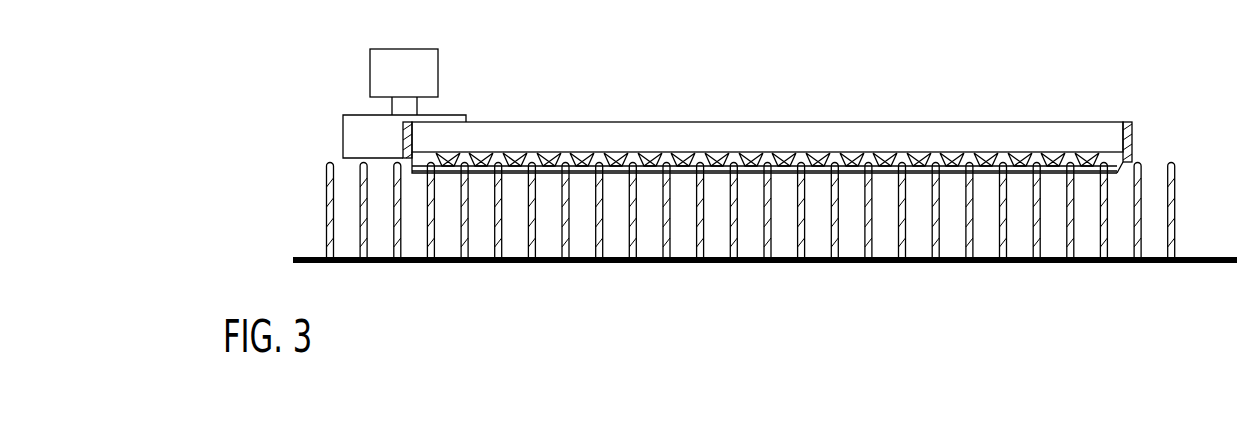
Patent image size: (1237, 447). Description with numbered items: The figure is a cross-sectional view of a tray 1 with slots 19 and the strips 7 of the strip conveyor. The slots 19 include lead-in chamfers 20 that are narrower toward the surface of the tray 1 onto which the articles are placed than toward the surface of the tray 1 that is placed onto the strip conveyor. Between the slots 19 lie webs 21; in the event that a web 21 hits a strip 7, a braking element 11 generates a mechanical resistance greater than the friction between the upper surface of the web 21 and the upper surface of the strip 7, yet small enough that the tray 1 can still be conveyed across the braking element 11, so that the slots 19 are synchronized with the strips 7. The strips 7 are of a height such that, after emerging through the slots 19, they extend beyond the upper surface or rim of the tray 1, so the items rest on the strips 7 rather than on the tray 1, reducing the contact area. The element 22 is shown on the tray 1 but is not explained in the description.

The tray 1 is at (789, 115).
The strip 7 is at (632, 264).
The braking element 11 is at (407, 49).
The slot 19 is at (633, 152).
The lead-in chamfer 20 is at (745, 152).
The web 21 is at (650, 152).
The carrier bar 22 is at (830, 122).